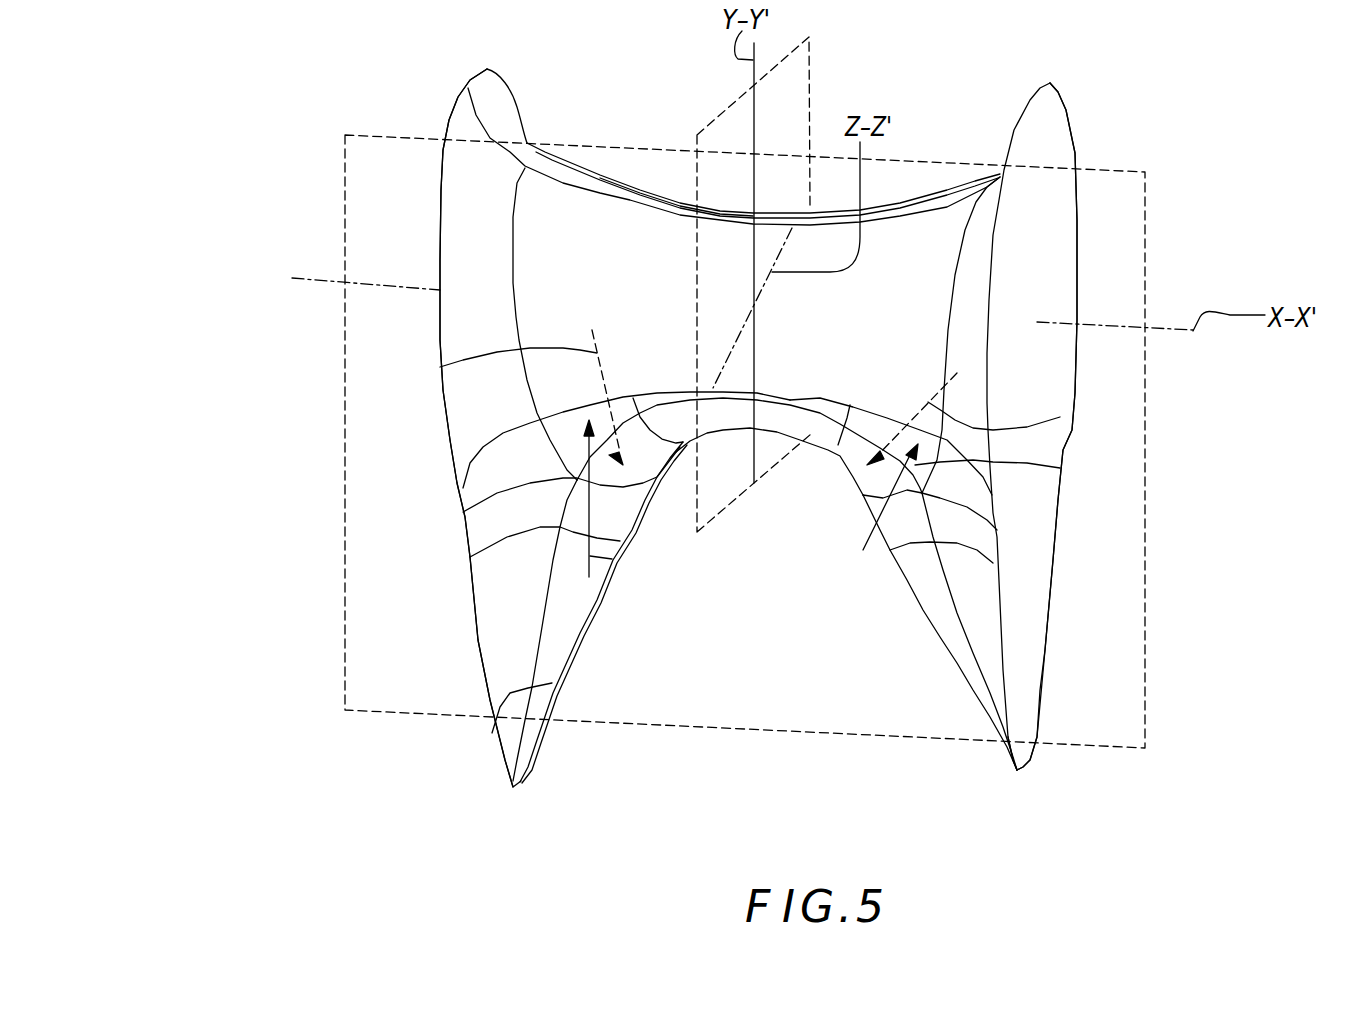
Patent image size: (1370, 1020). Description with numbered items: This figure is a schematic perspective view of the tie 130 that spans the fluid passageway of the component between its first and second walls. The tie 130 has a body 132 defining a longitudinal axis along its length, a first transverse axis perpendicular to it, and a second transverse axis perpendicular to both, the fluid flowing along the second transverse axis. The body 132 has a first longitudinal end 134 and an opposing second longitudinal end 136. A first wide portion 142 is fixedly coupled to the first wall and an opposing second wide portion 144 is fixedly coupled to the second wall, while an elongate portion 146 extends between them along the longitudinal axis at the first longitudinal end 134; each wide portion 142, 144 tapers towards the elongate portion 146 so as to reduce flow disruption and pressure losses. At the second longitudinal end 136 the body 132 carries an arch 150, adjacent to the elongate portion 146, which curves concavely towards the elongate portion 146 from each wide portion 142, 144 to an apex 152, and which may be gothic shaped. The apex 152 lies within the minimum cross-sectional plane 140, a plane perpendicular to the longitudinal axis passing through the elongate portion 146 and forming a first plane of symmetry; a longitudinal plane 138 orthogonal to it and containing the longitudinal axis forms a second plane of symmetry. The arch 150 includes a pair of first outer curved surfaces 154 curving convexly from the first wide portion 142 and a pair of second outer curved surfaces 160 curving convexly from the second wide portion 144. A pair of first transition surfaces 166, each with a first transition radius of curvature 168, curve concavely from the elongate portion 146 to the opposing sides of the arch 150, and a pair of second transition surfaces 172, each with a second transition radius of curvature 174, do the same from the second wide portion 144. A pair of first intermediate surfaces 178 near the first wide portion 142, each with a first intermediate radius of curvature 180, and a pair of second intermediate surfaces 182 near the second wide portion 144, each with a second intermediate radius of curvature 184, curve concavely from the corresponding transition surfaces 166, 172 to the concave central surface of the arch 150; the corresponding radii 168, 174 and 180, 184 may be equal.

The tie 130 is at (224, 117).
The body 132 is at (417, 88).
The first longitudinal end 134 is at (660, 135).
The second longitudinal end 136 is at (795, 756).
The longitudinal plane 138 is at (380, 625).
The minimum cross-sectional plane 140 is at (798, 70).
The first wide portion 142 is at (468, 242).
The second wide portion 144 is at (983, 245).
The elongate portion 146 is at (568, 205).
The arch 150 is at (725, 620).
The apex 152 is at (757, 430).
The first outer curved surfaces 154 is at (552, 660).
The second outer curved surfaces 160 is at (953, 630).
The first transition surfaces 166 is at (563, 443).
The first transition radius of curvature 168 is at (615, 560).
The second transition surfaces 172 is at (1060, 468).
The second transition radius of curvature 174 is at (890, 560).
The first intermediate surfaces 178 is at (653, 460).
The first intermediate radius of curvature 180 is at (440, 367).
The second intermediate surfaces 182 is at (843, 457).
The second intermediate radius of curvature 184 is at (1060, 417).